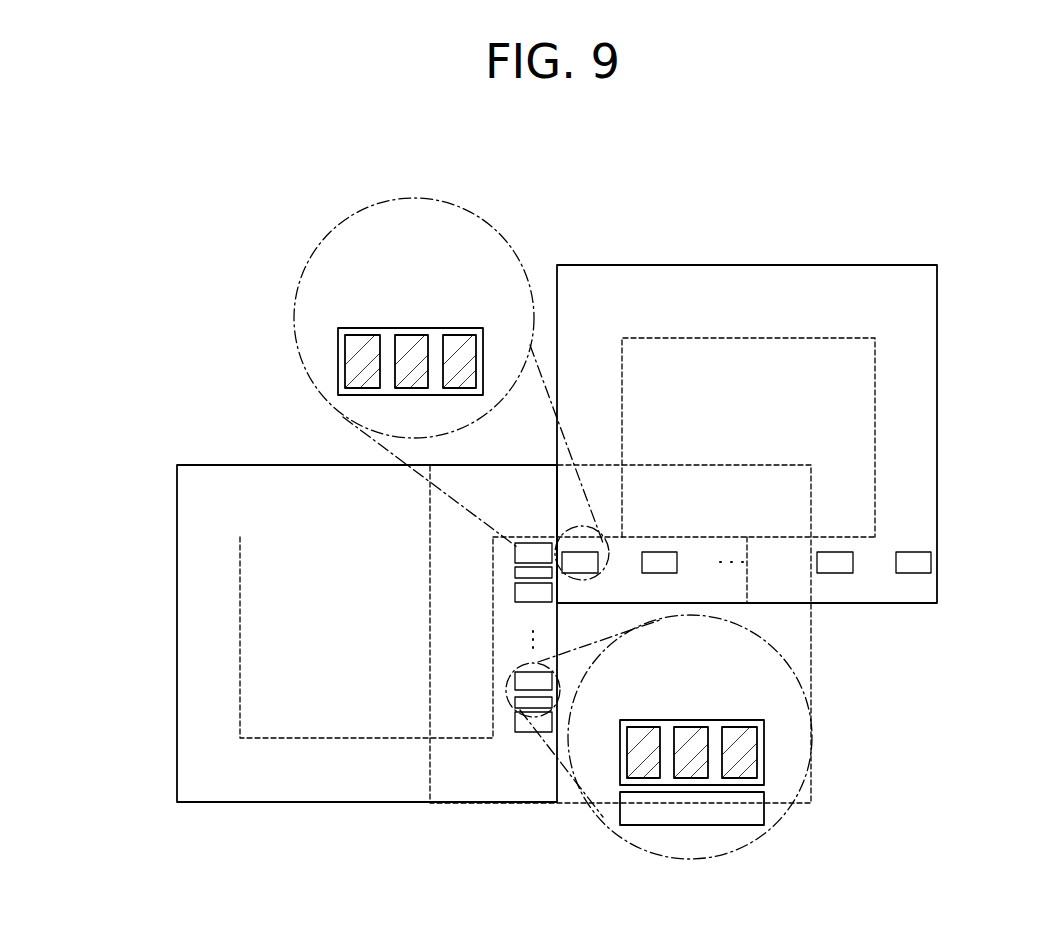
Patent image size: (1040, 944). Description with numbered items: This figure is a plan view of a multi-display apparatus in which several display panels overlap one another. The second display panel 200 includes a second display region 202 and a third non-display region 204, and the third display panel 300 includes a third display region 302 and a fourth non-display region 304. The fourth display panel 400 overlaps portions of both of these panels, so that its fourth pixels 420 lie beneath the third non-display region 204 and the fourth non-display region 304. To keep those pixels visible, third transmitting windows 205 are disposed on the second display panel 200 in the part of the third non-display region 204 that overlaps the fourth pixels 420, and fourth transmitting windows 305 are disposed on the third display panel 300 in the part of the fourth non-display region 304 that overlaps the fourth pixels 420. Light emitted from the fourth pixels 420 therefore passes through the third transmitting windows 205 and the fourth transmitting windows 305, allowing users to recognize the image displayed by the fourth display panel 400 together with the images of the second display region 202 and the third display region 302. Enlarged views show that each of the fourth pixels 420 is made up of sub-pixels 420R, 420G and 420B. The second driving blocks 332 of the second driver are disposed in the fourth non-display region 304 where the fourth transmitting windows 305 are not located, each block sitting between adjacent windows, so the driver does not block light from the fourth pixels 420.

The second display panel 200 is at (937, 387).
The second display region 202 is at (745, 338).
The third non-display region 204 is at (748, 588).
The third transmitting windows 205 is at (338, 360).
The third display panel 300 is at (177, 757).
The third display region 302 is at (239, 662).
The fourth non-display region 304 is at (520, 735).
The fourth transmitting windows 305 is at (764, 750).
The second driving blocks 332 is at (764, 812).
The fourth display panel 400 is at (811, 668).
The fourth pixels 420 is at (497, 268).
The red sub-pixel 420R is at (359, 335).
The green sub-pixel 420G is at (409, 335).
The blue sub-pixel 420B is at (459, 335).